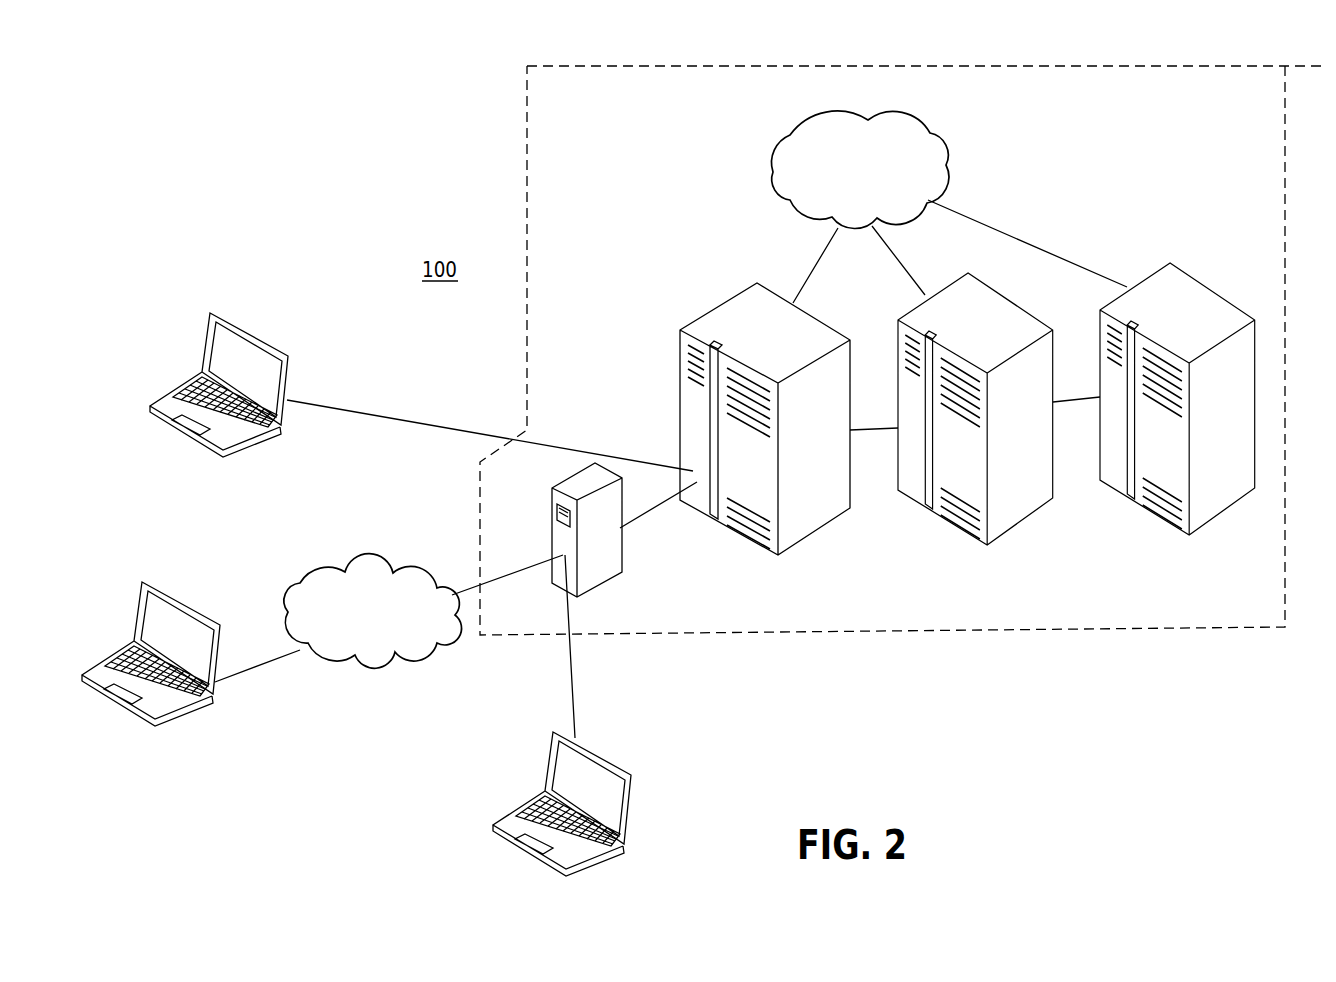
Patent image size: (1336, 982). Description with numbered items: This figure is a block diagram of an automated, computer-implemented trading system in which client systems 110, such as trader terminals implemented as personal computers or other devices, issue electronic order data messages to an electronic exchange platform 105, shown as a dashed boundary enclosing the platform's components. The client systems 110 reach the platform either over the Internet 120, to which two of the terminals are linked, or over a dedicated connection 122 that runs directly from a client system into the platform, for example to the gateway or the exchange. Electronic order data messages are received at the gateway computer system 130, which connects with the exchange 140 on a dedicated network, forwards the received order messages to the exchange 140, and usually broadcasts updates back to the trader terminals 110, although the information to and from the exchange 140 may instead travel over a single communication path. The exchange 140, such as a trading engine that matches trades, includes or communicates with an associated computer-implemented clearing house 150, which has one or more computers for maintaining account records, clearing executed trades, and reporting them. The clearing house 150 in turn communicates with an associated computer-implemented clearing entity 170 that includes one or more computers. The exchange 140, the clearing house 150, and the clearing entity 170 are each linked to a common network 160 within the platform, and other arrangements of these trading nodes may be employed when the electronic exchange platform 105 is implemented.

The electronic exchange platform 105 is at (527, 155).
The client systems 110 is at (162, 398).
The Internet 120 is at (355, 561).
The dedicated connection 122 is at (491, 433).
The gateway computer system 130 is at (556, 541).
The exchange 140 is at (681, 368).
The clearing house 150 is at (1022, 498).
The network 160 is at (917, 122).
The clearing entity 170 is at (1210, 480).